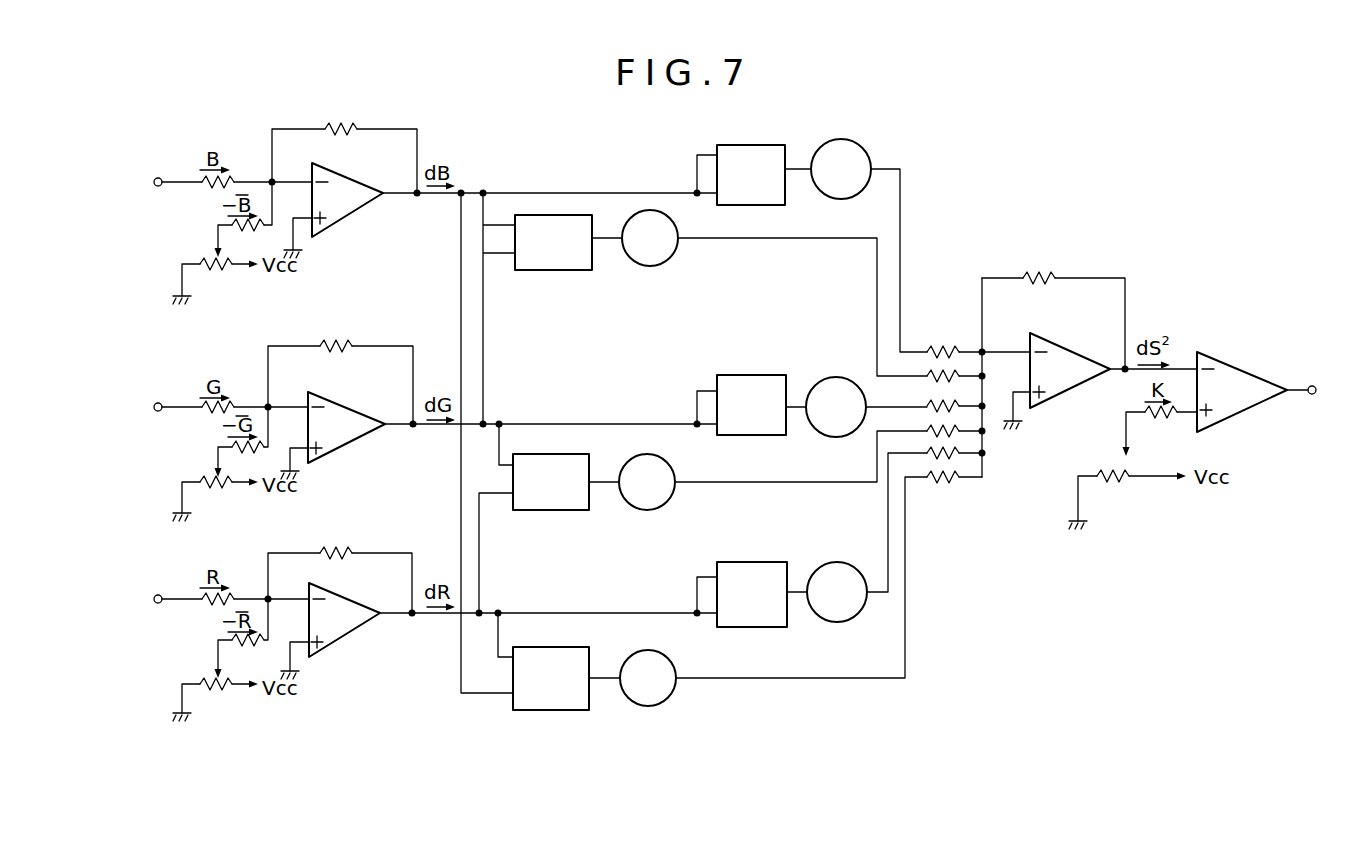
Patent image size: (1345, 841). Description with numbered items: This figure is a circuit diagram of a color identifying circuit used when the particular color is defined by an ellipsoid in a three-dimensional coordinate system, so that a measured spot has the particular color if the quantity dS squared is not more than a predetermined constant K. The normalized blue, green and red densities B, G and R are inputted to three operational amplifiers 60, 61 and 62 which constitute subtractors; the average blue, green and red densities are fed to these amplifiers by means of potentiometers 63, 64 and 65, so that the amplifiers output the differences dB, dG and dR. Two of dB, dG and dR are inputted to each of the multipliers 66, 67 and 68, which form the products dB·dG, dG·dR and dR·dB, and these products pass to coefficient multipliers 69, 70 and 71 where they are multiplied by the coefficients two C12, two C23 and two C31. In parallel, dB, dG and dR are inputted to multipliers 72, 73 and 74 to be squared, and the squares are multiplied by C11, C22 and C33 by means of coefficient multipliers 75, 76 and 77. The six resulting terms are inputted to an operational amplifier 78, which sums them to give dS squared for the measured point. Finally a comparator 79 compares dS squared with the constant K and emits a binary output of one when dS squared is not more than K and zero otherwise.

The operational amplifier 60 is at (347, 215).
The operational amplifier 61 is at (343, 447).
The operational amplifier 62 is at (347, 637).
The potentiometer 63 is at (226, 268).
The potentiometer 64 is at (226, 486).
The potentiometer 65 is at (230, 690).
The multiplier 66 is at (550, 272).
The multiplier 67 is at (552, 512).
The multiplier 68 is at (556, 712).
The coefficient multiplier 69 is at (647, 268).
The coefficient multiplier 70 is at (643, 511).
The coefficient multiplier 71 is at (647, 708).
The multiplier 72 is at (750, 143).
The multiplier 73 is at (748, 373).
The multiplier 74 is at (749, 562).
The coefficient multiplier 75 is at (852, 141).
The coefficient multiplier 76 is at (848, 378).
The coefficient multiplier 77 is at (852, 563).
The operational amplifier 78 is at (1072, 347).
The comparator 79 is at (1240, 415).